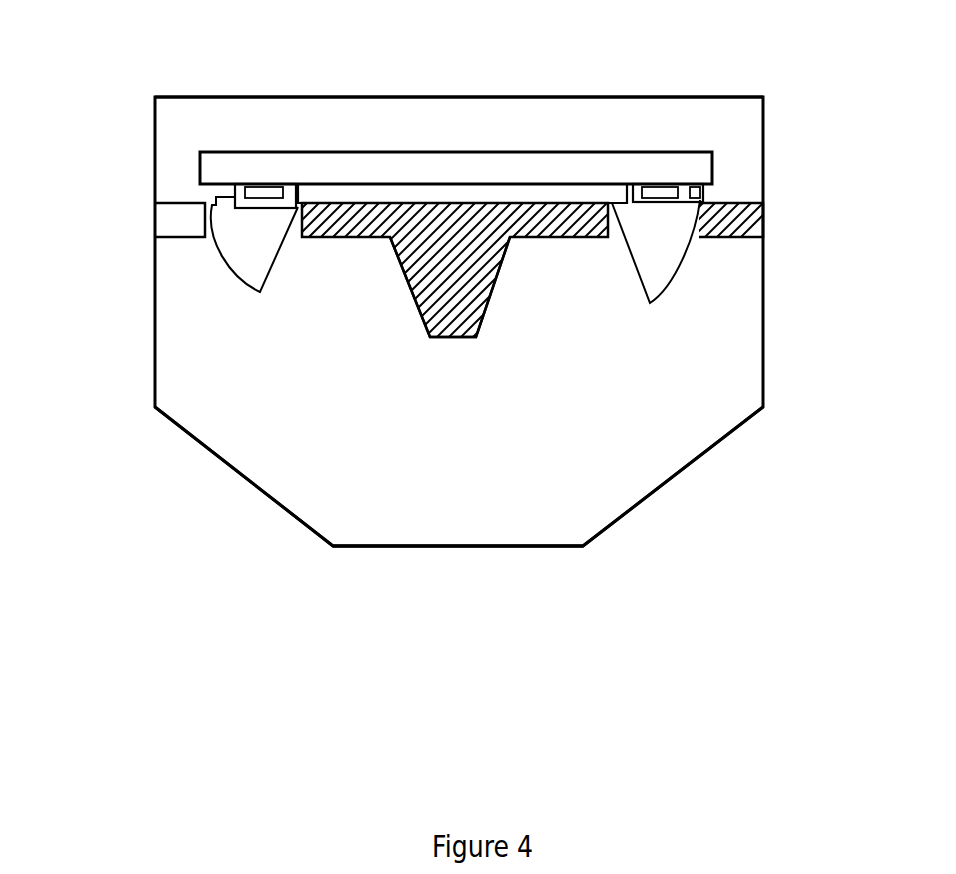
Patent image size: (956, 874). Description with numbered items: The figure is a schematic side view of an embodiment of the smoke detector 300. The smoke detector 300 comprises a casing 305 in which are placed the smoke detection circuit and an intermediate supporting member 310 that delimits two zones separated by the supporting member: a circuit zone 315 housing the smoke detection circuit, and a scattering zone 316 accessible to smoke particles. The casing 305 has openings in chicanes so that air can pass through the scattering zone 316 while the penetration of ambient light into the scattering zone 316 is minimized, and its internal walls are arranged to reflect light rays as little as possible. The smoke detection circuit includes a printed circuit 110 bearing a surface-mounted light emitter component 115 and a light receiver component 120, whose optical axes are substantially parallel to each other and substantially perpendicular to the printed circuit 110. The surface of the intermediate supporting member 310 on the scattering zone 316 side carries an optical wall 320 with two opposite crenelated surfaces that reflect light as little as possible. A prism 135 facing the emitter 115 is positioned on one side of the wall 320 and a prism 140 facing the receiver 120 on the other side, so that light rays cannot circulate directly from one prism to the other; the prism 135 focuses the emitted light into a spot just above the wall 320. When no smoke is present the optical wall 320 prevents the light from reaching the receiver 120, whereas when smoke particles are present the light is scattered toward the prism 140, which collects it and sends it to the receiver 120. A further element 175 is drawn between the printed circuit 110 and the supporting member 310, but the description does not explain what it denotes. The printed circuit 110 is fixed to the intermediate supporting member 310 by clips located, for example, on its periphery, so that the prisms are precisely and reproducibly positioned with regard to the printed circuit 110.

The printed circuit 110 is at (427, 170).
The light emitter component 115 is at (262, 195).
The light receiver component 120 is at (662, 193).
The prism facing the emitter 135 is at (256, 244).
The prism facing the receiver 140 is at (673, 243).
The interface layer 175 is at (383, 192).
The smoke detector 300 is at (513, 679).
The casing 305 is at (363, 542).
The intermediate supporting member 310 is at (517, 222).
The circuit zone 315 is at (703, 128).
The scattering zone 316 is at (473, 432).
The optical wall 320 is at (423, 287).